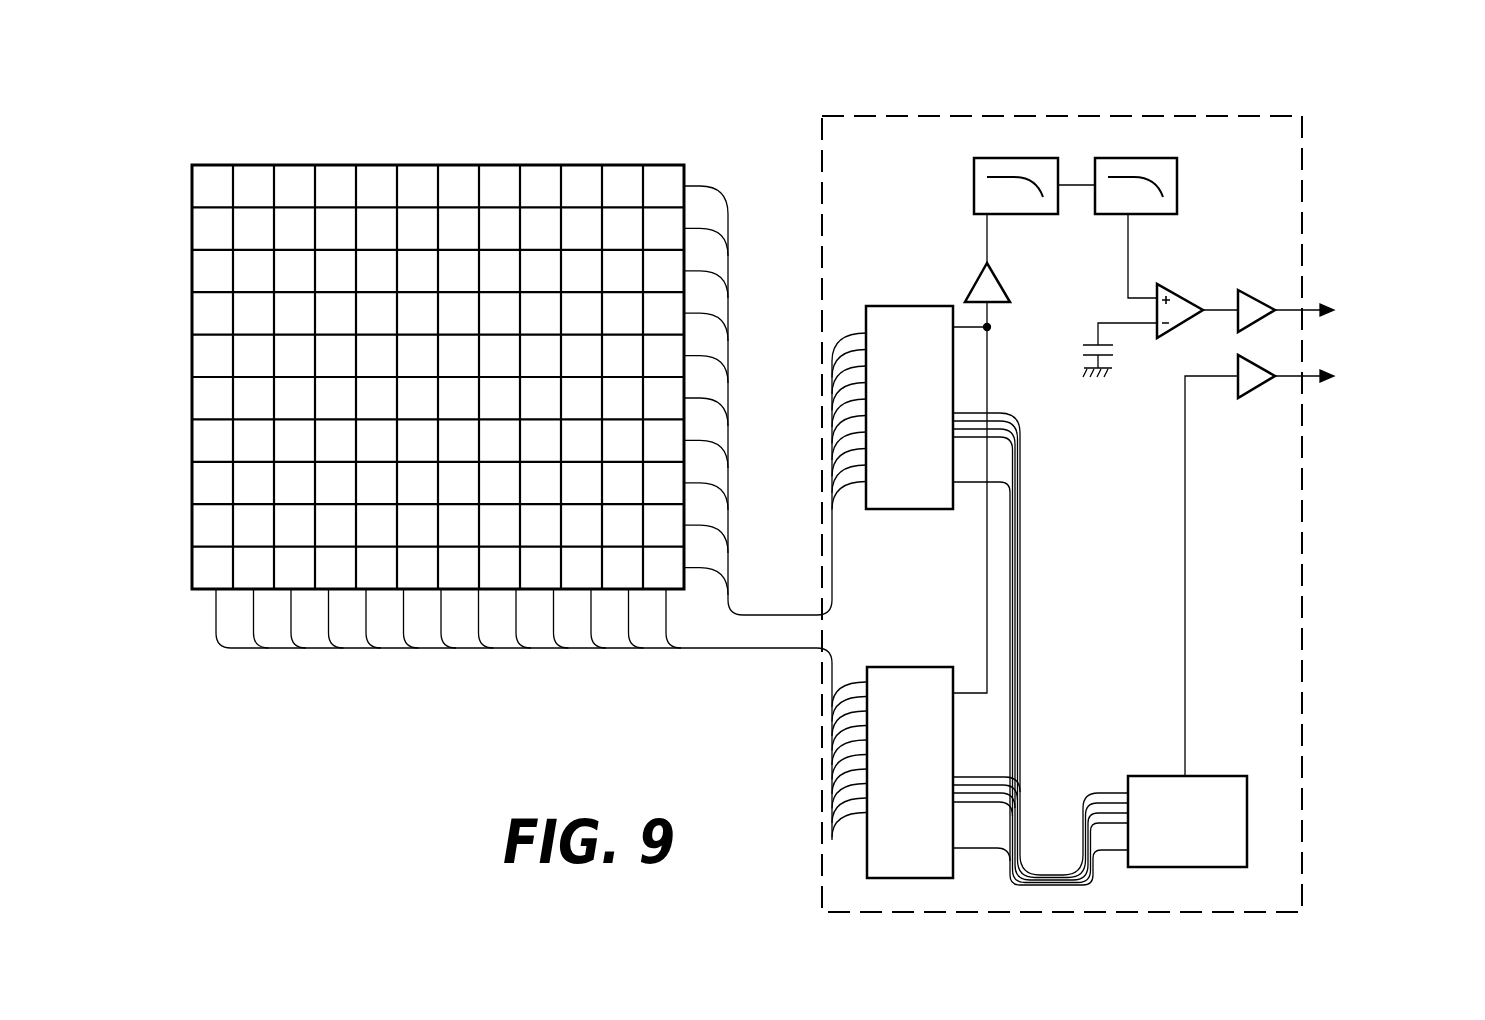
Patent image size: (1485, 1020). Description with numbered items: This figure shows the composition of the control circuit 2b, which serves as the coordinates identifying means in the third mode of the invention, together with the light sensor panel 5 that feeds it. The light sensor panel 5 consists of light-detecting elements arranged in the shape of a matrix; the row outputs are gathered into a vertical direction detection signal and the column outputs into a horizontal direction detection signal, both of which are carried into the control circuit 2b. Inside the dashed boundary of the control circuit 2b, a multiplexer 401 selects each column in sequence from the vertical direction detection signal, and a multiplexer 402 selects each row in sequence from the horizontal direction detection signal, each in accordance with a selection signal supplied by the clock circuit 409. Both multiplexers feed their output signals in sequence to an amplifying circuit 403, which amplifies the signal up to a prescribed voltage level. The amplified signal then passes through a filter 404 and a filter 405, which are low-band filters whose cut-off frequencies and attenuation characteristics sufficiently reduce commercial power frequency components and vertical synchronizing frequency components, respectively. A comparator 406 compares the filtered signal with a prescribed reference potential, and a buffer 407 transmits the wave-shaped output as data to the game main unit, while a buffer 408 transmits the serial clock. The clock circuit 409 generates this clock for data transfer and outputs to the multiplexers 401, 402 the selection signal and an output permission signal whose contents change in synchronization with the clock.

The light sensor panel 5 is at (531, 165).
The control circuit 2b is at (880, 116).
The multiplexer 401 is at (890, 306).
The multiplexer 402 is at (903, 667).
The amplifying circuit 403 is at (1000, 287).
The filter 404 is at (974, 178).
The filter 405 is at (1177, 175).
The comparator 406 is at (1178, 288).
The buffer 407 is at (1248, 292).
The buffer 408 is at (1260, 396).
The clock circuit 409 is at (1217, 776).